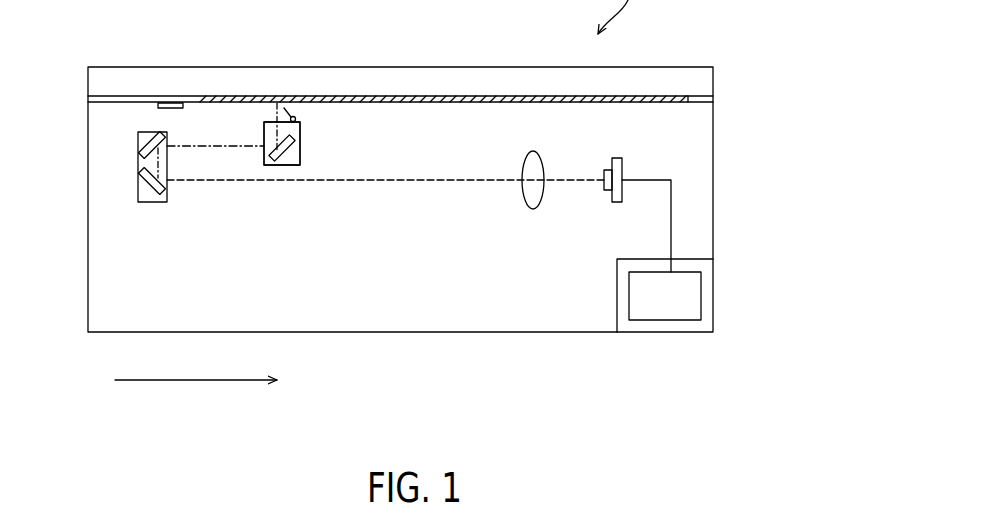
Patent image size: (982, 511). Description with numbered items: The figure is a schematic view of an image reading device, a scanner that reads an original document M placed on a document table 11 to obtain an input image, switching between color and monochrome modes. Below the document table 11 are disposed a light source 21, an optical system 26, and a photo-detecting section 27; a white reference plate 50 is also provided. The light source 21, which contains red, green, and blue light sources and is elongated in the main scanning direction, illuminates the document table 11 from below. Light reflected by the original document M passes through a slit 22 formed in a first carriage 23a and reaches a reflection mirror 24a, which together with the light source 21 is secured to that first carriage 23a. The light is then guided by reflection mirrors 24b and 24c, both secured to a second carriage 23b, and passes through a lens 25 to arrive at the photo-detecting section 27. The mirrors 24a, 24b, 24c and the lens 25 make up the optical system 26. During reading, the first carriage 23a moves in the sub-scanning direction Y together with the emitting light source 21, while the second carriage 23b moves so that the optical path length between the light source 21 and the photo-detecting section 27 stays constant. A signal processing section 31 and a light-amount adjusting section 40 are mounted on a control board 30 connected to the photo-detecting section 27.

The document table 11 is at (706, 95).
The original document M is at (455, 97).
The sub-scanning direction Y is at (196, 364).
The white reference plate 50 is at (166, 109).
The light source 21 is at (300, 119).
The slit 22 is at (264, 123).
The first carriage 23a is at (300, 146).
The second carriage 23b is at (138, 174).
The reflection mirror 24a is at (283, 167).
The reflection mirror 24b is at (138, 135).
The reflection mirror 24c is at (155, 198).
The lens 25 is at (538, 210).
The optical system 26 is at (256, 248).
The photo-detecting section 27 is at (613, 203).
The control board 30 is at (683, 325).
The signal processing section 31 is at (665, 296).
The light-amount adjusting section 40 is at (683, 322).